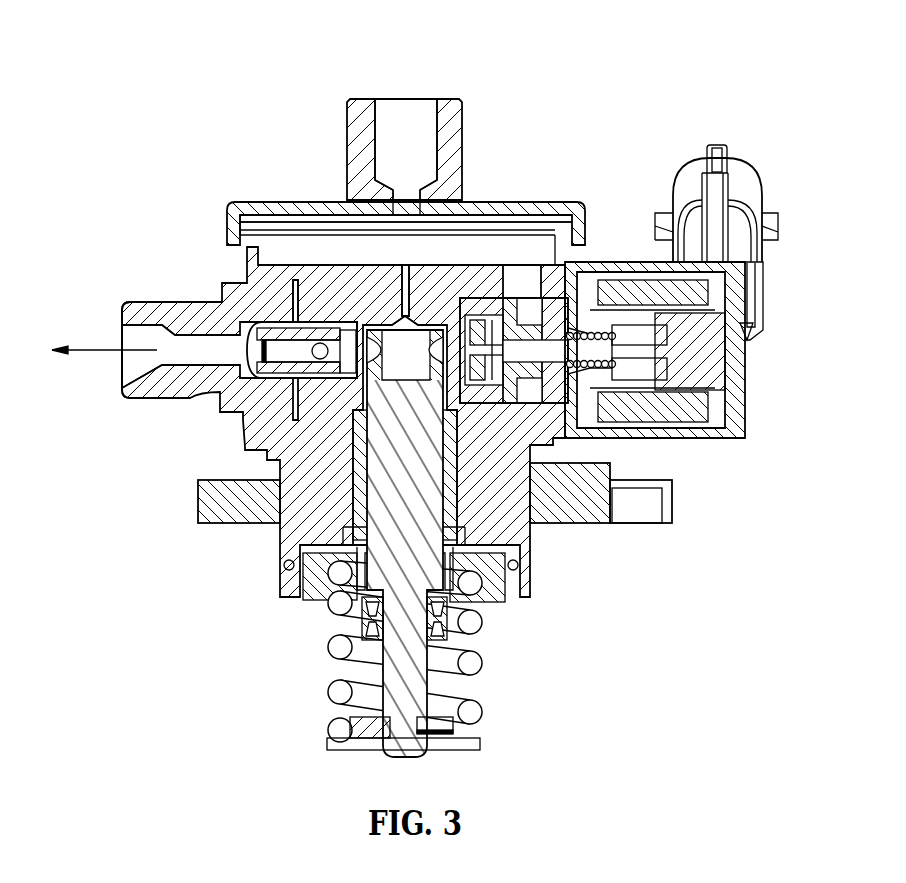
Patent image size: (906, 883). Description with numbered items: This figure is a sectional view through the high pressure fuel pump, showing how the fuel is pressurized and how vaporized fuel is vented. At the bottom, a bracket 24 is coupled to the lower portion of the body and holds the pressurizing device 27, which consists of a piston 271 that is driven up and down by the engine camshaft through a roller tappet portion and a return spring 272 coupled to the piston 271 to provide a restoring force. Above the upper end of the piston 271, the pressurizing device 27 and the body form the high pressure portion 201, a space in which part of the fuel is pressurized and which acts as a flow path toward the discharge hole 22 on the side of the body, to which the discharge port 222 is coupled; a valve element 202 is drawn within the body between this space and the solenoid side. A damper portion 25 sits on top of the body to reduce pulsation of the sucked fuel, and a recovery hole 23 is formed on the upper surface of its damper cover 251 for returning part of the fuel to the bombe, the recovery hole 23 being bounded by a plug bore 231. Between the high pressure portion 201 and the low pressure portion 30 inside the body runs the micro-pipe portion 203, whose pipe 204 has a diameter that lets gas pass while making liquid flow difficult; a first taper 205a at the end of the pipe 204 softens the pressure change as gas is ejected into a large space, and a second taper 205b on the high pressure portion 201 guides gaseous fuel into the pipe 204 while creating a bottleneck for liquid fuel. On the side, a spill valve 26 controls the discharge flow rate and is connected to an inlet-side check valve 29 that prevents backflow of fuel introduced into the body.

The discharge hole 22 is at (123, 328).
The discharge port 222 is at (167, 302).
The high pressure portion 201 is at (250, 407).
The micro-pipe portion 203 is at (261, 84).
The pipe 204 is at (370, 307).
The first taper 205a is at (400, 296).
The second taper 205b is at (300, 296).
The recovery hole 23 is at (401, 99).
The plug bore 231 is at (451, 112).
The damper portion 25 is at (487, 178).
The damper cover 251 is at (503, 200).
The valve member 202 is at (460, 282).
The low pressure portion 30 is at (527, 273).
The spill valve 26 is at (627, 262).
The inlet-side check valve 29 is at (515, 435).
The bracket 24 is at (583, 513).
The pressurizing device 27 is at (592, 667).
The piston 271 is at (413, 673).
The return spring 272 is at (467, 713).